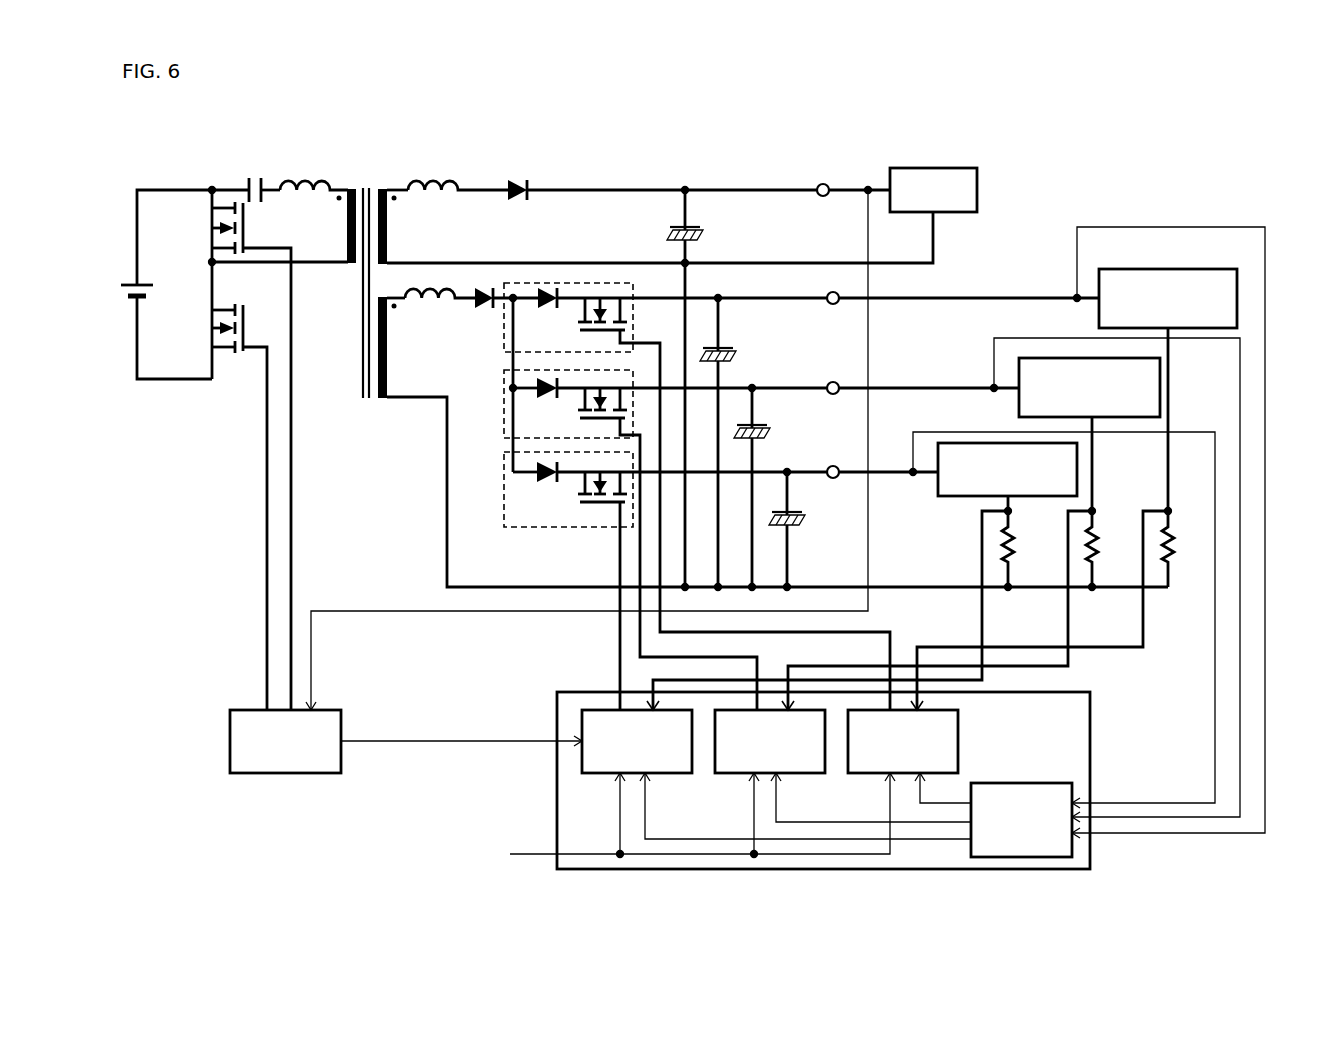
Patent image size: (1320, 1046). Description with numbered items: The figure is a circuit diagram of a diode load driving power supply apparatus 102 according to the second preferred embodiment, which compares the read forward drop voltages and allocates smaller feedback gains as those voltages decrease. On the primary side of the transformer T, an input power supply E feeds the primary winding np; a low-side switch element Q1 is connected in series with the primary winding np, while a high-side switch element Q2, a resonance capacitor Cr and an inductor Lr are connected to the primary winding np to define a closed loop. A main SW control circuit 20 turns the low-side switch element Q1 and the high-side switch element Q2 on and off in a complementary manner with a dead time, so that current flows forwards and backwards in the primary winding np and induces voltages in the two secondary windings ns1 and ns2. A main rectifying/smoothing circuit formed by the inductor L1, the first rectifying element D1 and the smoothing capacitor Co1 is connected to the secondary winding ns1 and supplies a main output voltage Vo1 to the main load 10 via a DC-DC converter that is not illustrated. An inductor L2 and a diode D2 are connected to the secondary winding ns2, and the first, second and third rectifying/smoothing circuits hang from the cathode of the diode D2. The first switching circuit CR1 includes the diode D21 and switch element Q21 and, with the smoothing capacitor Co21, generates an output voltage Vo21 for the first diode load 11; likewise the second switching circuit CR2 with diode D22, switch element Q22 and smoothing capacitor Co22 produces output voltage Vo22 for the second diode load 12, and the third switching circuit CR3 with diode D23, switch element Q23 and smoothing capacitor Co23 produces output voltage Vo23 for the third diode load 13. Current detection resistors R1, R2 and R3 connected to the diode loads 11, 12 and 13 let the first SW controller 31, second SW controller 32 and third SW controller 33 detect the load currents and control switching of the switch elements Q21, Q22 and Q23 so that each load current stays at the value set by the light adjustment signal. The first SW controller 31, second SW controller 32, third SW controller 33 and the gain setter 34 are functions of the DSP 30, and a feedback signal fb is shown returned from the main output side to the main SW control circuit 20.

The diode load driving power supply apparatus 102 is at (161, 167).
The main load 10 is at (970, 168).
The first diode load 11 is at (1183, 268).
The second diode load 12 is at (1160, 375).
The third diode load 13 is at (1077, 465).
The main SW control circuit 20 is at (341, 712).
The DSP 30 is at (1090, 692).
The first SW controller 31 is at (872, 775).
The second SW controller 32 is at (737, 775).
The third SW controller 33 is at (607, 775).
The gain setter 34 is at (1043, 782).
The input power supply E is at (131, 278).
The low-side switch element Q1 is at (223, 507).
The high-side switch element Q2 is at (235, 456).
The resonance capacitor Cr is at (259, 178).
The inductor Lr is at (314, 172).
The transformer T is at (365, 185).
The primary winding np is at (284, 226).
The secondary winding ns1 is at (655, 228).
The secondary winding ns2 is at (773, 444).
The inductor L1 is at (458, 172).
The first rectifying element D1 is at (697, 177).
The smoothing capacitor Co1 is at (699, 388).
The main output voltage Vo1 is at (817, 180).
The inductor L2 is at (440, 310).
The diode D2 is at (501, 380).
The diode D21 is at (810, 309).
The switch element Q21 is at (723, 504).
The diode D22 is at (766, 399).
The switch element Q22 is at (652, 549).
The diode D23 is at (725, 483).
The switch element Q23 is at (596, 591).
The first switching circuit CR1 is at (504, 340).
The second switching circuit CR2 is at (504, 408).
The third switching circuit CR3 is at (504, 475).
The smoothing capacitor Co21 is at (736, 442).
The smoothing capacitor Co22 is at (769, 487).
The smoothing capacitor Co23 is at (803, 529).
The output voltage Vo21 is at (1038, 532).
The output voltage Vo22 is at (1026, 580).
The output voltage Vo23 is at (1013, 620).
The current detection resistor R1 is at (1055, 609).
The current detection resistor R2 is at (952, 609).
The current detection resistor R3 is at (843, 609).
The feedback signal fb is at (587, 450).